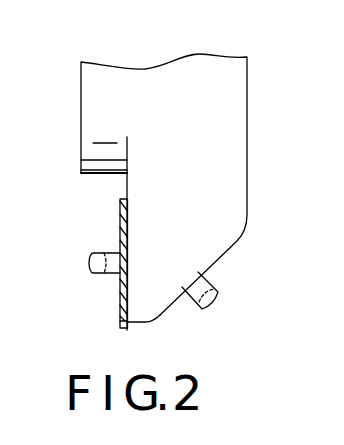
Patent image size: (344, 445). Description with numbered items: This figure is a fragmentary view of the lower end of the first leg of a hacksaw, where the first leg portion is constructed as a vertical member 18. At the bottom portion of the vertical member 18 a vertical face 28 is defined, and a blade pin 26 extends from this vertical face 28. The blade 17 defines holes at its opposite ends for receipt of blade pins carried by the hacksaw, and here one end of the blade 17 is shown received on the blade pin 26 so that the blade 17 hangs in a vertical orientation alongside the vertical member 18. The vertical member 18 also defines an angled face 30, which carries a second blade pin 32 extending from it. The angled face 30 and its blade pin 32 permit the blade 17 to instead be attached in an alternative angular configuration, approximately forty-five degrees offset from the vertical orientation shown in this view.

The vertical member 18 is at (80, 107).
The vertical face 28 is at (127, 184).
The blade pin 26 is at (92, 266).
The blade 17 is at (120, 298).
The blade pin 32 is at (203, 285).
The angled face 30 is at (170, 303).